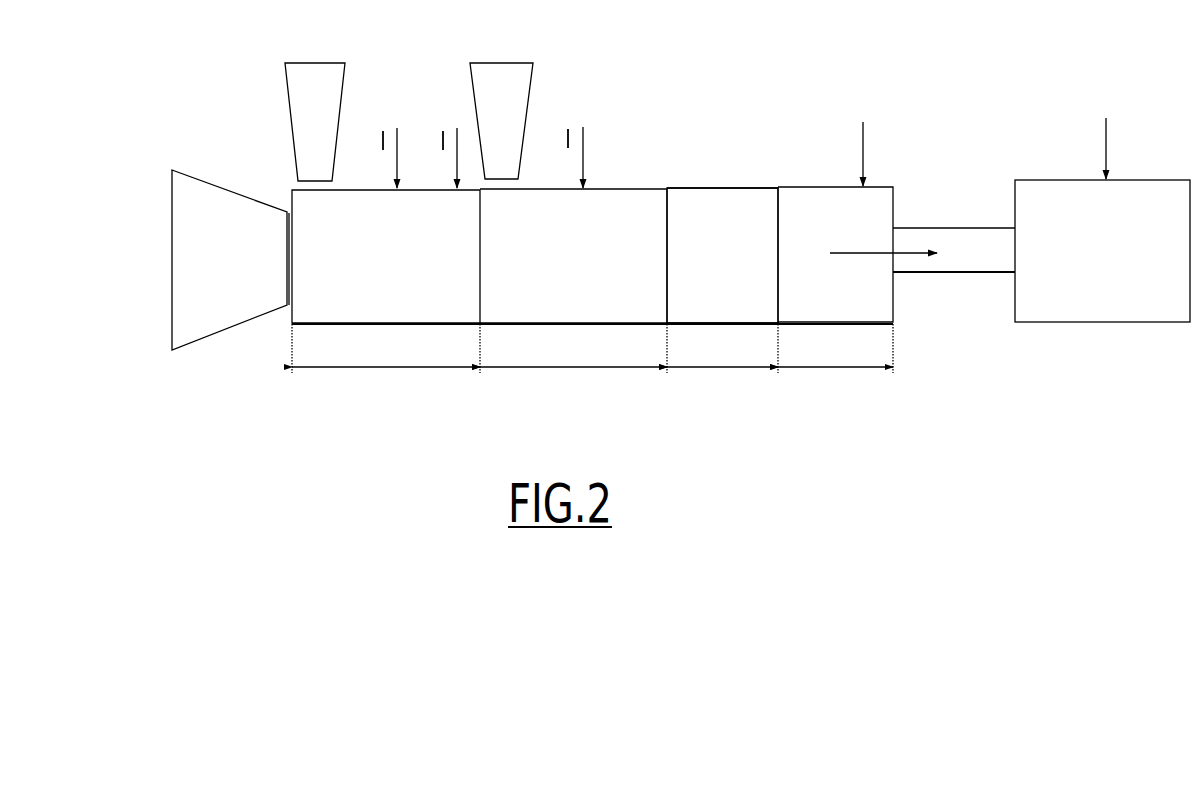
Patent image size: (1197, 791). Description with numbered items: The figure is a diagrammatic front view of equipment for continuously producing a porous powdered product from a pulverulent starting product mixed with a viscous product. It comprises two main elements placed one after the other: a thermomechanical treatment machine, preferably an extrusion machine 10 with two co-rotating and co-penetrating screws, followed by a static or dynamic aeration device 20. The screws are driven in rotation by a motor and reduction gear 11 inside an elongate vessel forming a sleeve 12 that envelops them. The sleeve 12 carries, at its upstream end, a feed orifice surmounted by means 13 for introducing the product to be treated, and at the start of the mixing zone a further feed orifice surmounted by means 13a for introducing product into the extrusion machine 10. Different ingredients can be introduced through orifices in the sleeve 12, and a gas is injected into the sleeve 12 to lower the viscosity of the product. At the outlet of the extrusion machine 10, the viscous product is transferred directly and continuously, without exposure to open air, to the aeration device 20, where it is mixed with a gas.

The extrusion machine 10 is at (753, 173).
The motor and reduction gear 11 is at (165, 362).
The sleeve 12 is at (703, 187).
The means for introducing the product 13 is at (500, 90).
The means for introducing the product 13a is at (313, 92).
The aeration device 20 is at (1107, 338).